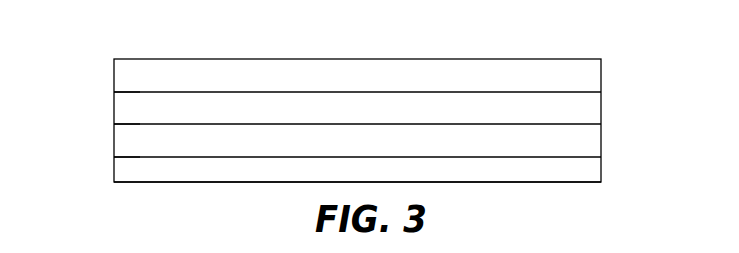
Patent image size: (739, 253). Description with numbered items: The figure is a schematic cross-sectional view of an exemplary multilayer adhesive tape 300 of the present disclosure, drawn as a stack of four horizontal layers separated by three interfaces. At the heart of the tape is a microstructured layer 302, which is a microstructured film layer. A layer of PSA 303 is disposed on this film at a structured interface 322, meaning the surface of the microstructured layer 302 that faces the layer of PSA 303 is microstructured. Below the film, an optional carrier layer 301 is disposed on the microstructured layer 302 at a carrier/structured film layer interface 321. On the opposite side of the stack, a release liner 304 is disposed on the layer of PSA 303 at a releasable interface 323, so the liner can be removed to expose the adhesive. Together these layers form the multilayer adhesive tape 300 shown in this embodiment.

The multilayer adhesive tape 300 is at (568, 34).
The carrier layer 301 is at (579, 168).
The microstructured layer 302 is at (580, 141).
The layer of PSA 303 is at (580, 110).
The release liner 304 is at (580, 76).
The carrier/structured film layer interface 321 is at (130, 157).
The structured interface 322 is at (130, 124).
The releasable interface 323 is at (130, 92).